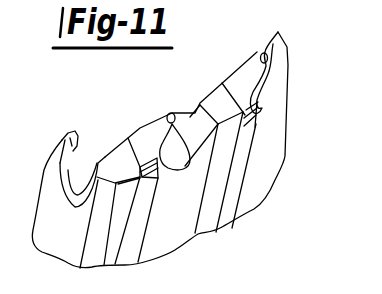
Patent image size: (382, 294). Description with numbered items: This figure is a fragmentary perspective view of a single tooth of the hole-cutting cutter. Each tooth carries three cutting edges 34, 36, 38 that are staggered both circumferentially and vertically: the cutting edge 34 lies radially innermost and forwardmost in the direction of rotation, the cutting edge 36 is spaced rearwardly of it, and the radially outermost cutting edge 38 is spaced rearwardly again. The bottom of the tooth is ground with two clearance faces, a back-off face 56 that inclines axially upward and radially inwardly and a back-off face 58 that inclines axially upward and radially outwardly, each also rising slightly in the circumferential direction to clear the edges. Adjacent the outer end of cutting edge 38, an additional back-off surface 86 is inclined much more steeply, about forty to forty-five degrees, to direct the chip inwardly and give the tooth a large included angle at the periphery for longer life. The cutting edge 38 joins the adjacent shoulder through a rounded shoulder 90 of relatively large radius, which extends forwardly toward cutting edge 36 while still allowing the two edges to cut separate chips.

The cutting edge 34 is at (170, 113).
The cutting edge 36 is at (166, 113).
The cutting edge 38 is at (158, 170).
The back-off face 56 is at (244, 73).
The back-off face 58 is at (262, 100).
The additional back-off surface 86 is at (257, 131).
The rounded shoulder 90 is at (184, 165).